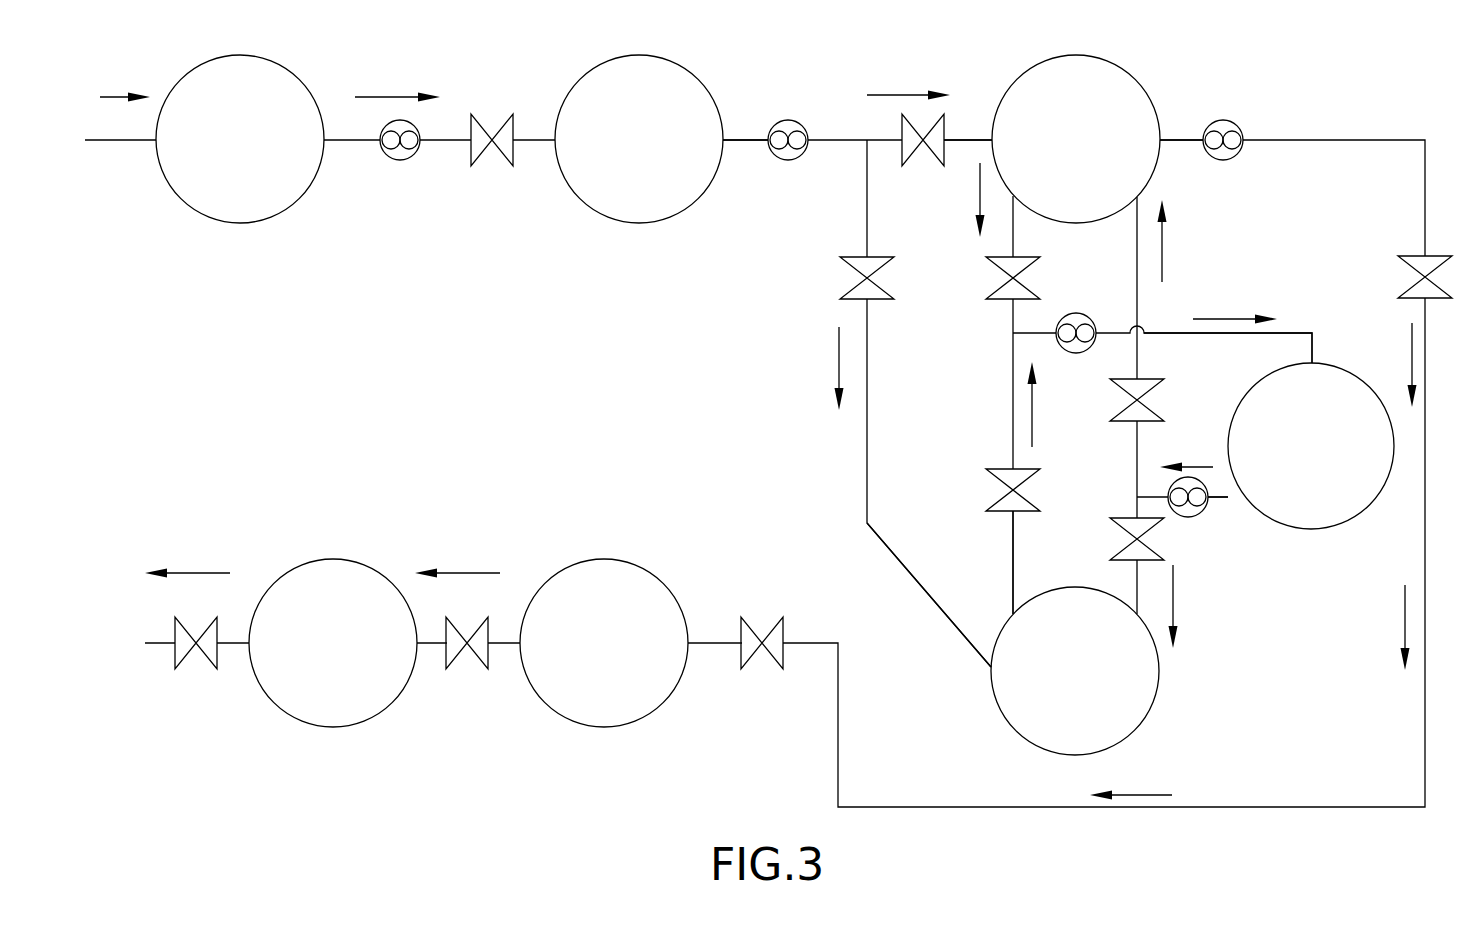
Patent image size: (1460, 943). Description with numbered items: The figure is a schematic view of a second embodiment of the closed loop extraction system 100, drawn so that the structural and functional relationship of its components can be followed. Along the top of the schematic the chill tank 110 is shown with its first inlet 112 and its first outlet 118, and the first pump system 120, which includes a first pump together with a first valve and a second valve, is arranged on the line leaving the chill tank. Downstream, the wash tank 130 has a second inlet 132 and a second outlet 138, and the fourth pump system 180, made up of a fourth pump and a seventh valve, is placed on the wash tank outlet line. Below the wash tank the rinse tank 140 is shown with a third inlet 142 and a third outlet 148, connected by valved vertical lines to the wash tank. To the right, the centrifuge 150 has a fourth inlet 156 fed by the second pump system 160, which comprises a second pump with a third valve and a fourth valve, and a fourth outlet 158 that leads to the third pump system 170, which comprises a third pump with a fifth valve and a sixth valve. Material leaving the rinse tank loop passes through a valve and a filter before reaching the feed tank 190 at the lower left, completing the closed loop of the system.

The closed loop extraction system 100 is at (193, 330).
The chill tank 110 is at (603, 55).
The first inlet 112 is at (555, 138).
The first outlet 118 is at (724, 146).
The first pump system 120 is at (783, 119).
The wash tank 130 is at (1040, 57).
The second inlet 132 is at (992, 140).
The second outlet 138 is at (1160, 138).
The fourth pump system 180 is at (1240, 123).
The second pump system 160 is at (1050, 326).
The fourth inlet 156 is at (1312, 360).
The centrifuge 150 is at (1376, 527).
The fourth outlet 158 is at (1240, 512).
The third pump system 170 is at (1200, 512).
The third outlet 148 is at (1013, 612).
The third inlet 142 is at (990, 672).
The rinse tank 140 is at (1008, 728).
The feed tank 190 is at (300, 728).